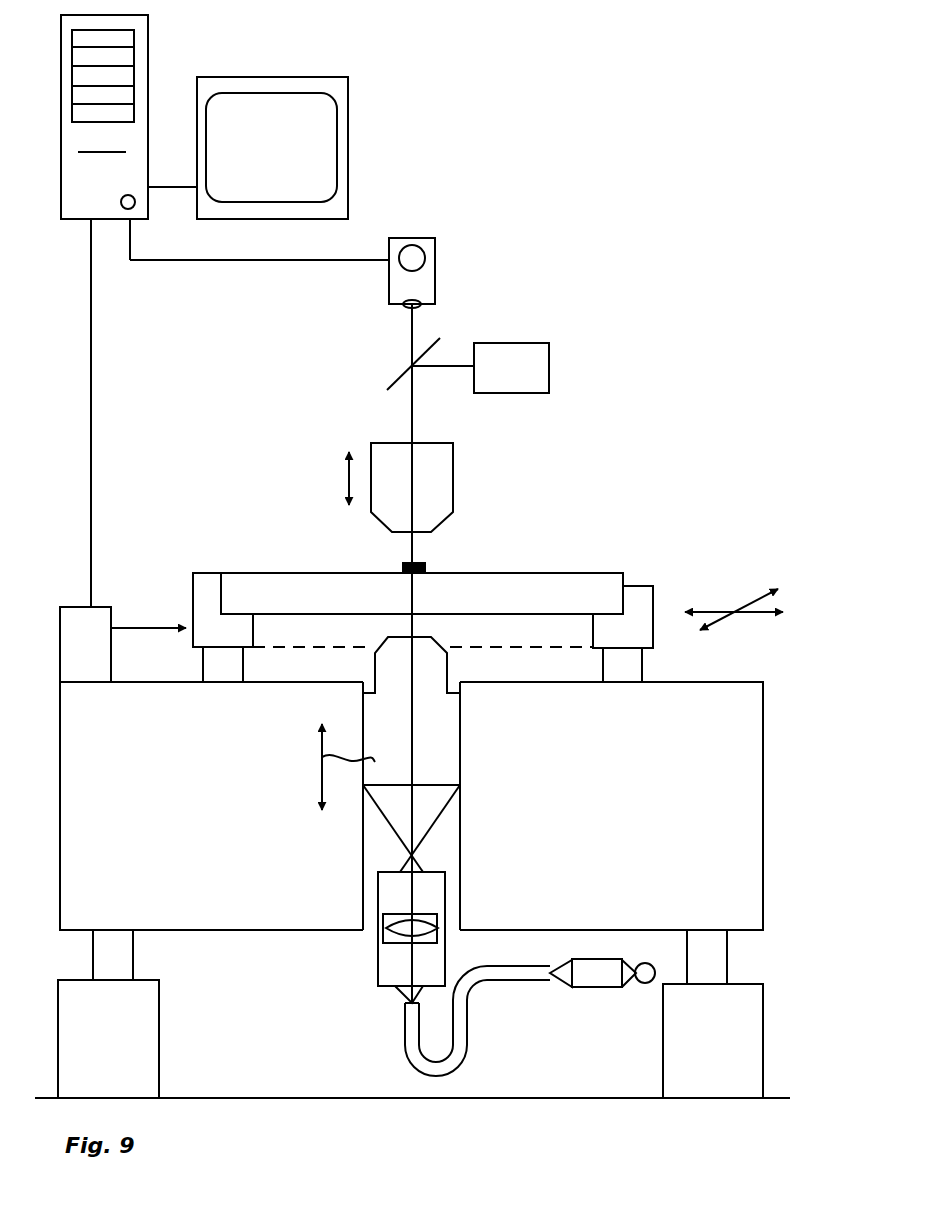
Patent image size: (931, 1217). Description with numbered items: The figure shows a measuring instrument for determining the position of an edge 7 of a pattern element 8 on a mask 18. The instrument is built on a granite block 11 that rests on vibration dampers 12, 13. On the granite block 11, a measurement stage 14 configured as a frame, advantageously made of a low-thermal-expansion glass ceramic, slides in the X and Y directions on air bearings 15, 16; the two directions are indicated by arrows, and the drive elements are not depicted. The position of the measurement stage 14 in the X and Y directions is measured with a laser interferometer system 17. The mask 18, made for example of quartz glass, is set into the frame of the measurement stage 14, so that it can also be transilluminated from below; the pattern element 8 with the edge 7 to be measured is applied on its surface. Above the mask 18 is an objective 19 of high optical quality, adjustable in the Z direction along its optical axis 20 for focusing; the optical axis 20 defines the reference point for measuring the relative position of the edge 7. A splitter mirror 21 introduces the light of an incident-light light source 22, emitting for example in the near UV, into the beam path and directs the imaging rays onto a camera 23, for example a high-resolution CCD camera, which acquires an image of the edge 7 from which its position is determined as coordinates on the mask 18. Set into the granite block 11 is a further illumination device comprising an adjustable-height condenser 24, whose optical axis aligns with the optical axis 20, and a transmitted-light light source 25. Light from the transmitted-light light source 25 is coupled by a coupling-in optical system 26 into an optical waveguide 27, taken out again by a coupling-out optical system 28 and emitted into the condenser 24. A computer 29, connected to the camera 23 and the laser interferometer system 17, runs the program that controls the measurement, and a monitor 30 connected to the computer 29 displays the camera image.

The edge 7 is at (407, 563).
The pattern element 8 is at (420, 563).
The granite block 11 is at (70, 737).
The vibration damper 12 is at (128, 953).
The vibration damper 13 is at (718, 952).
The measurement stage 14 is at (200, 593).
The air bearing 15 is at (222, 662).
The air bearing 16 is at (620, 672).
The laser interferometer system 17 is at (78, 625).
The mask 18 is at (600, 582).
The objective 19 is at (440, 456).
The optical axis 20 is at (413, 428).
The splitter mirror 21 is at (397, 380).
The incident-light light source 22 is at (533, 350).
The camera 23 is at (398, 280).
The condenser 24 is at (448, 707).
The transmitted-light light source 25 is at (633, 983).
The coupling-in optical system 26 is at (602, 978).
The optical waveguide 27 is at (415, 1060).
The coupling-out optical system 28 is at (382, 967).
The computer 29 is at (137, 72).
The monitor 30 is at (337, 193).